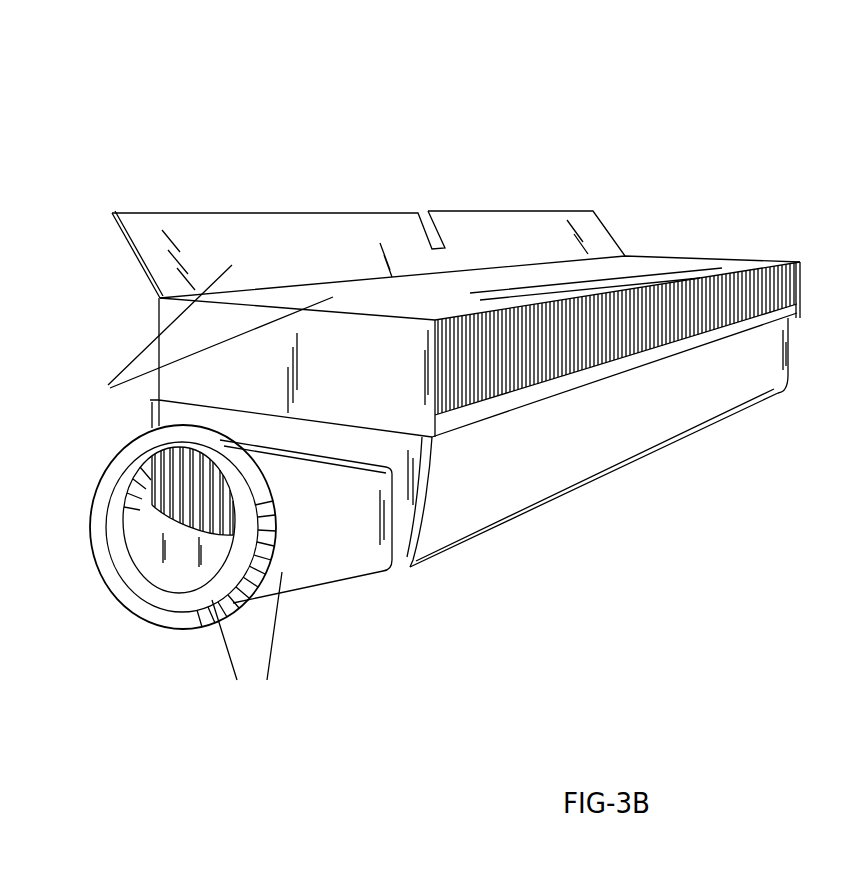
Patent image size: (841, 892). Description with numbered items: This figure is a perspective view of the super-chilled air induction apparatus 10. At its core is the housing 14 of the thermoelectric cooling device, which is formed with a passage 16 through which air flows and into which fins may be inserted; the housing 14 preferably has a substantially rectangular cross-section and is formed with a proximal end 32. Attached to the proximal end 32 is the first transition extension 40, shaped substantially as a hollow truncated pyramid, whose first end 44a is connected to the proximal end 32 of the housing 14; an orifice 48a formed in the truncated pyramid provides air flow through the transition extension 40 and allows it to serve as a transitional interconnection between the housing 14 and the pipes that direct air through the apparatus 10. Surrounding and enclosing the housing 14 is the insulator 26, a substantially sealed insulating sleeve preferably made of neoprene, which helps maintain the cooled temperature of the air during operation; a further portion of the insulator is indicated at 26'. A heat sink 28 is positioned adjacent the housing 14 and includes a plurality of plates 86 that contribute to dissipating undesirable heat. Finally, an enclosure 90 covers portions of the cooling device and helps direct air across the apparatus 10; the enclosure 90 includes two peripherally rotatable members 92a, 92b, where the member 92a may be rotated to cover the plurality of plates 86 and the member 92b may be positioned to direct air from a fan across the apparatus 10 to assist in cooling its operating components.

The super-chilled air induction apparatus 10 is at (683, 133).
The enclosure 90 is at (535, 210).
The peripherally rotatable member 92b is at (278, 233).
The peripherally rotatable member 92a is at (635, 273).
The plurality of plates 86 is at (587, 328).
The heat sink 28 is at (762, 288).
The housing 14 is at (735, 425).
The insulator 26 is at (624, 474).
The housing side wall 26' is at (806, 371).
The first transition extension 40 is at (267, 530).
The first end 44a is at (267, 490).
The proximal end 32 is at (150, 428).
The passage 16 is at (155, 547).
The orifice 48a is at (170, 563).